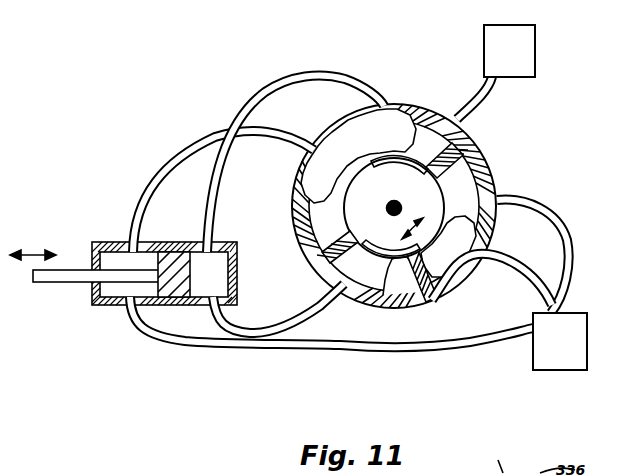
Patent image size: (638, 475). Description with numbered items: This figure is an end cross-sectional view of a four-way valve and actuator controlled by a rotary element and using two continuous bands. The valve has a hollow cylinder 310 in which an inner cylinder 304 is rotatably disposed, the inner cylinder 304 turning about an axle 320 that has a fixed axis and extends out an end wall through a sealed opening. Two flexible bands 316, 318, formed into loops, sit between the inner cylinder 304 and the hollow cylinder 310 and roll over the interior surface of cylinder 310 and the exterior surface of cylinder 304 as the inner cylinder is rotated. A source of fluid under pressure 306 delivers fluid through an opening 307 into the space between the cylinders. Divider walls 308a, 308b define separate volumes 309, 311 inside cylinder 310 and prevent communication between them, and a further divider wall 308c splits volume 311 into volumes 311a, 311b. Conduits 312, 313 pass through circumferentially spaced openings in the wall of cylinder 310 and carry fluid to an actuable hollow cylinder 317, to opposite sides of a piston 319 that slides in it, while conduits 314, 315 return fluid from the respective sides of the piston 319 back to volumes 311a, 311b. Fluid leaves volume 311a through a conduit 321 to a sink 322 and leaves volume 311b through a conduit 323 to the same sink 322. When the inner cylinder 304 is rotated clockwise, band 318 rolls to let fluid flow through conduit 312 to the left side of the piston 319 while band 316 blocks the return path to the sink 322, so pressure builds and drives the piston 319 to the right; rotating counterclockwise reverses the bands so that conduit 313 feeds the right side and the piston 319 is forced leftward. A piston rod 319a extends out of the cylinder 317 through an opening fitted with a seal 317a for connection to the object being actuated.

The inner cylinder 304 is at (401, 207).
The source of fluid under pressure 306 is at (536, 50).
The opening 307 is at (472, 122).
The divider wall 308a is at (470, 143).
The divider wall 308b is at (302, 243).
The divider wall 308c is at (432, 302).
The volume 309 is at (301, 178).
The hollow cylinder 310 is at (421, 106).
The volume 311 is at (353, 263).
The volume 311a is at (487, 178).
The volume 311b is at (362, 292).
The conduit 312 is at (137, 176).
The conduit 313 is at (231, 180).
The conduit 314 is at (309, 300).
The conduit 315 is at (303, 346).
The flexible band 316 is at (498, 233).
The actuable hollow cylinder 317 is at (236, 277).
The seal 317a is at (92, 268).
The flexible band 318 is at (407, 104).
The piston 319 is at (174, 258).
The piston rod 319a is at (48, 283).
The axle 320 is at (466, 163).
The conduit 321 is at (556, 302).
The sink 322 is at (532, 345).
The conduit 323 is at (511, 338).